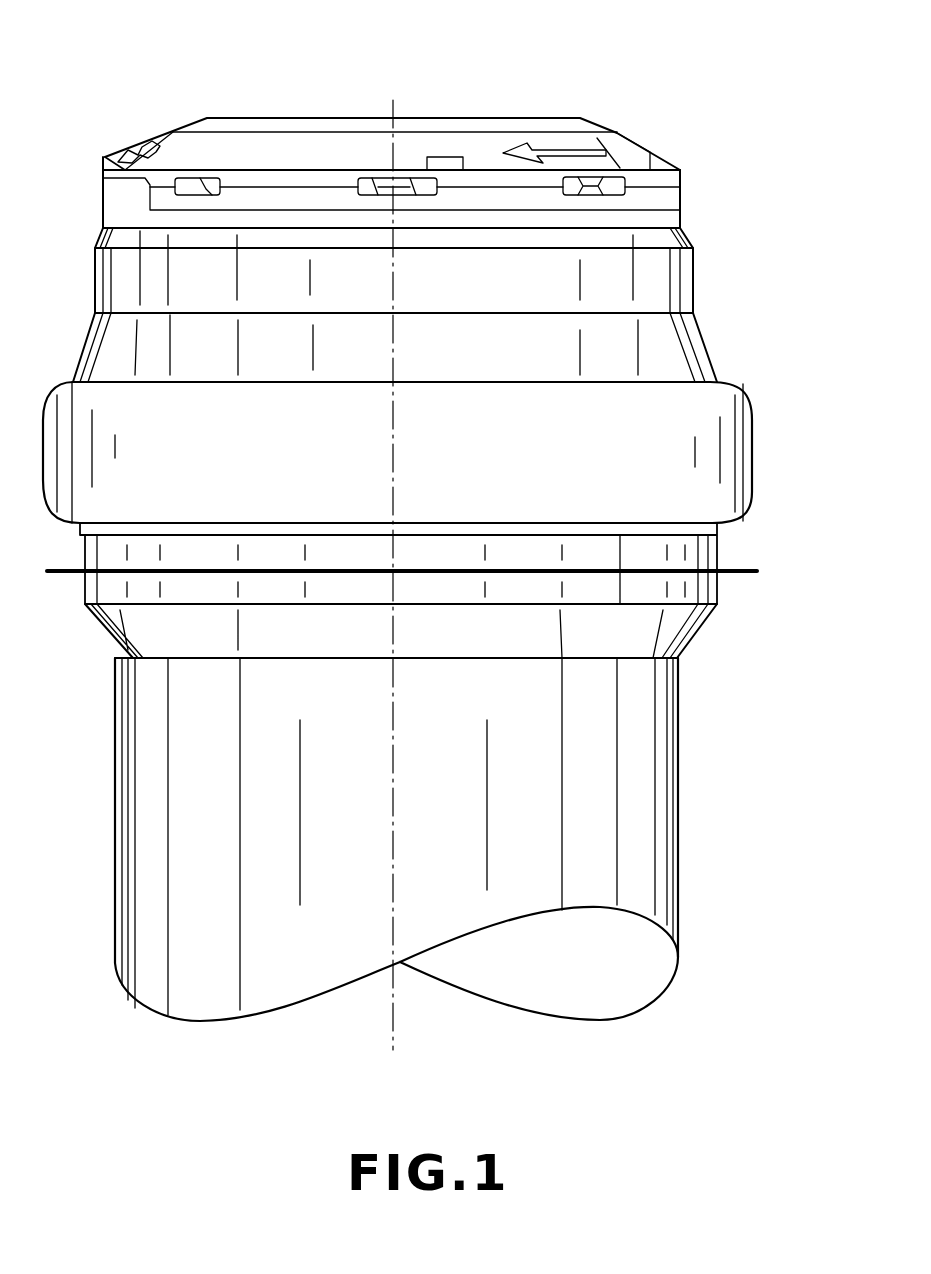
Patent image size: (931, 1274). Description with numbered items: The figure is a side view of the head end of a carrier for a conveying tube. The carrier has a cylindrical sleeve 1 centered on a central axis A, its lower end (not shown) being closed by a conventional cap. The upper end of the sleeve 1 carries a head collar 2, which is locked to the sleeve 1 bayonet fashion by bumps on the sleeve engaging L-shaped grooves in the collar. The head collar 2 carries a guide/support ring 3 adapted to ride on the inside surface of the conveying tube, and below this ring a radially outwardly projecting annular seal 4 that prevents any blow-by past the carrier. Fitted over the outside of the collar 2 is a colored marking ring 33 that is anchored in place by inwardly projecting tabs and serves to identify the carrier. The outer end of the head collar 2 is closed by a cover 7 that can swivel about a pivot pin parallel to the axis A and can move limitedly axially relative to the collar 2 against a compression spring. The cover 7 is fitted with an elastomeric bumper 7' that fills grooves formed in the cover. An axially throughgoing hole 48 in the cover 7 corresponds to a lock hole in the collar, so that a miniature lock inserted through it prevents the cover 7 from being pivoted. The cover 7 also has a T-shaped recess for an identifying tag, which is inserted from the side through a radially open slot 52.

The sleeve 1 is at (643, 843).
The head collar 2 is at (706, 350).
The guide/support ring 3 is at (738, 465).
The annular seal 4 is at (737, 577).
The cover 7 is at (392, 85).
The elastomeric bumper 7' is at (371, 85).
The colored marking ring 33 is at (678, 270).
The axially throughgoing hole 48 is at (138, 153).
The radially open slot 52 is at (435, 163).
The axis A is at (397, 1020).